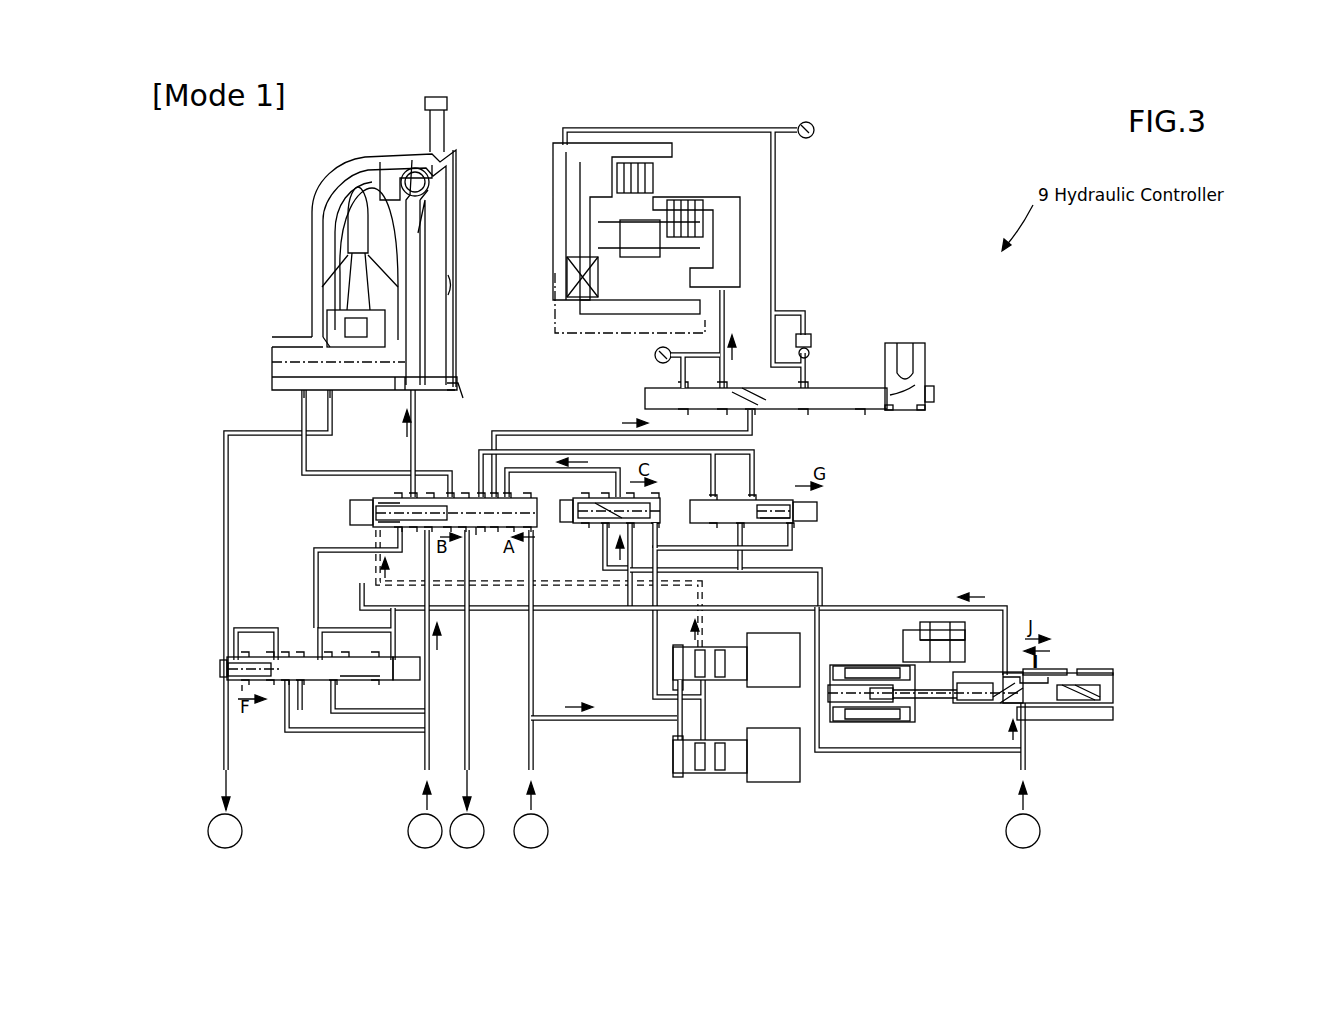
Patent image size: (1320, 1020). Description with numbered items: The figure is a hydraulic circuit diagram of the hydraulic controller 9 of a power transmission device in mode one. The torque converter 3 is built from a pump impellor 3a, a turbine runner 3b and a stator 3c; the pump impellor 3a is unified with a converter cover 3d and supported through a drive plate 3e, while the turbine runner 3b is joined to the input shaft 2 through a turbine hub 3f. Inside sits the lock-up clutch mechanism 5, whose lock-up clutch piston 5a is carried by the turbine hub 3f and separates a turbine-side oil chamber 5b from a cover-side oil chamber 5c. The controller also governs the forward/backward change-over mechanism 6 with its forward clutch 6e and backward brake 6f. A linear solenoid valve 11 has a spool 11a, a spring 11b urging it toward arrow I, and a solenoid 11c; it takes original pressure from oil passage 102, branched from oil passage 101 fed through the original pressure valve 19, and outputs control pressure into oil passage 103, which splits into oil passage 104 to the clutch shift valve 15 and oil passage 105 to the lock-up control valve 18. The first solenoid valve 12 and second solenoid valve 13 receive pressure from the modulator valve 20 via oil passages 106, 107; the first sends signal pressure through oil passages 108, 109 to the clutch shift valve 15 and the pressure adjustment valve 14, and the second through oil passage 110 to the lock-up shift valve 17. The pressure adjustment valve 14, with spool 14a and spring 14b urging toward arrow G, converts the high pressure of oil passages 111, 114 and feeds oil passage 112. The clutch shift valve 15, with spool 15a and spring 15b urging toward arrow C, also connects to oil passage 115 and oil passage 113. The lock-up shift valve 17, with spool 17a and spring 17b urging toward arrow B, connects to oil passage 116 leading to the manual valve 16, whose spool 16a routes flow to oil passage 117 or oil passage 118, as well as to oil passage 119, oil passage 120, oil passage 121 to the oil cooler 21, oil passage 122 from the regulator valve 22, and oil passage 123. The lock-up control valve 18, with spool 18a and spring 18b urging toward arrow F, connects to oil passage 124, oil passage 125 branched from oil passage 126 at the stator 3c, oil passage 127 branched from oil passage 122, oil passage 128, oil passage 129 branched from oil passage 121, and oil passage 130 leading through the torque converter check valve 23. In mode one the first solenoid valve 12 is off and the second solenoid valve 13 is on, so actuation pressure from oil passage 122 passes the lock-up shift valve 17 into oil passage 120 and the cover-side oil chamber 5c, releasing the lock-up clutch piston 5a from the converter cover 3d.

The input shaft 2 is at (380, 390).
The torque converter 3 is at (318, 188).
The pump impellor 3a is at (322, 242).
The turbine runner 3b is at (400, 252).
The stator 3c is at (360, 325).
The converter cover 3d is at (430, 300).
The drive plate 3e is at (455, 270).
The turbine hub 3f is at (465, 384).
The lock-up clutch mechanism 5 is at (462, 143).
The lock-up clutch piston 5a is at (428, 182).
The turbine-side oil chamber 5b is at (388, 170).
The cover-side oil chamber 5c is at (425, 235).
The forward/backward change-over mechanism 6 is at (830, 220).
The forward clutch 6e is at (698, 210).
The backward brake 6f is at (650, 178).
The hydraulic controller 9 is at (1017, 228).
The linear solenoid valve 11 is at (1038, 662).
The spool 11a is at (975, 705).
The spring 11b is at (1100, 692).
The solenoid 11c is at (868, 718).
The first solenoid valve 12 is at (776, 785).
The second solenoid valve 13 is at (776, 688).
The pressure adjustment valve 14 is at (822, 506).
The spool 14a is at (775, 518).
The spring 14b is at (768, 503).
The clutch shift valve 15 is at (666, 504).
The spool 15a is at (585, 510).
The spring 15b is at (655, 522).
The manual valve 16 is at (937, 395).
The spool 16a is at (858, 396).
The lock-up shift valve 17 is at (347, 509).
The spool 17a is at (478, 533).
The spring 17b is at (380, 497).
The lock-up control valve 18 is at (222, 667).
The spool 18a is at (345, 676).
The spring 18b is at (240, 660).
The original pressure valve 19 is at (1035, 843).
The modulator valve 20 is at (543, 843).
The oil cooler 21 is at (479, 843).
The regulator valve 22 is at (412, 841).
The torque converter check valve 23 is at (237, 843).
The oil passage 101 is at (1028, 768).
The oil passage 102 is at (1028, 737).
The oil passage 103 is at (1008, 612).
The oil passage 104 is at (625, 582).
The oil passage 105 is at (378, 580).
The oil passage 106 is at (528, 699).
The oil passage 107 is at (600, 720).
The oil passage 108 is at (655, 648).
The oil passage 109 is at (792, 549).
The oil passage 110 is at (548, 583).
The oil passage 111 is at (838, 750).
The oil passage 112 is at (596, 433).
The oil passage 113 is at (518, 470).
The oil passage 114 is at (742, 560).
The oil passage 115 is at (698, 571).
The oil passage 116 is at (535, 452).
The oil passage 117 is at (723, 332).
The oil passage 118 is at (776, 278).
The oil passage 119 is at (372, 473).
The oil passage 120 is at (418, 437).
The oil passage 121 is at (469, 636).
The oil passage 122 is at (430, 665).
The oil passage 123 is at (312, 571).
The oil passage 124 is at (340, 628).
The oil passage 125 is at (270, 628).
The oil passage 126 is at (226, 556).
The oil passage 127 is at (393, 713).
The oil passage 128 is at (302, 700).
The oil passage 129 is at (346, 731).
The oil passage 130 is at (226, 741).